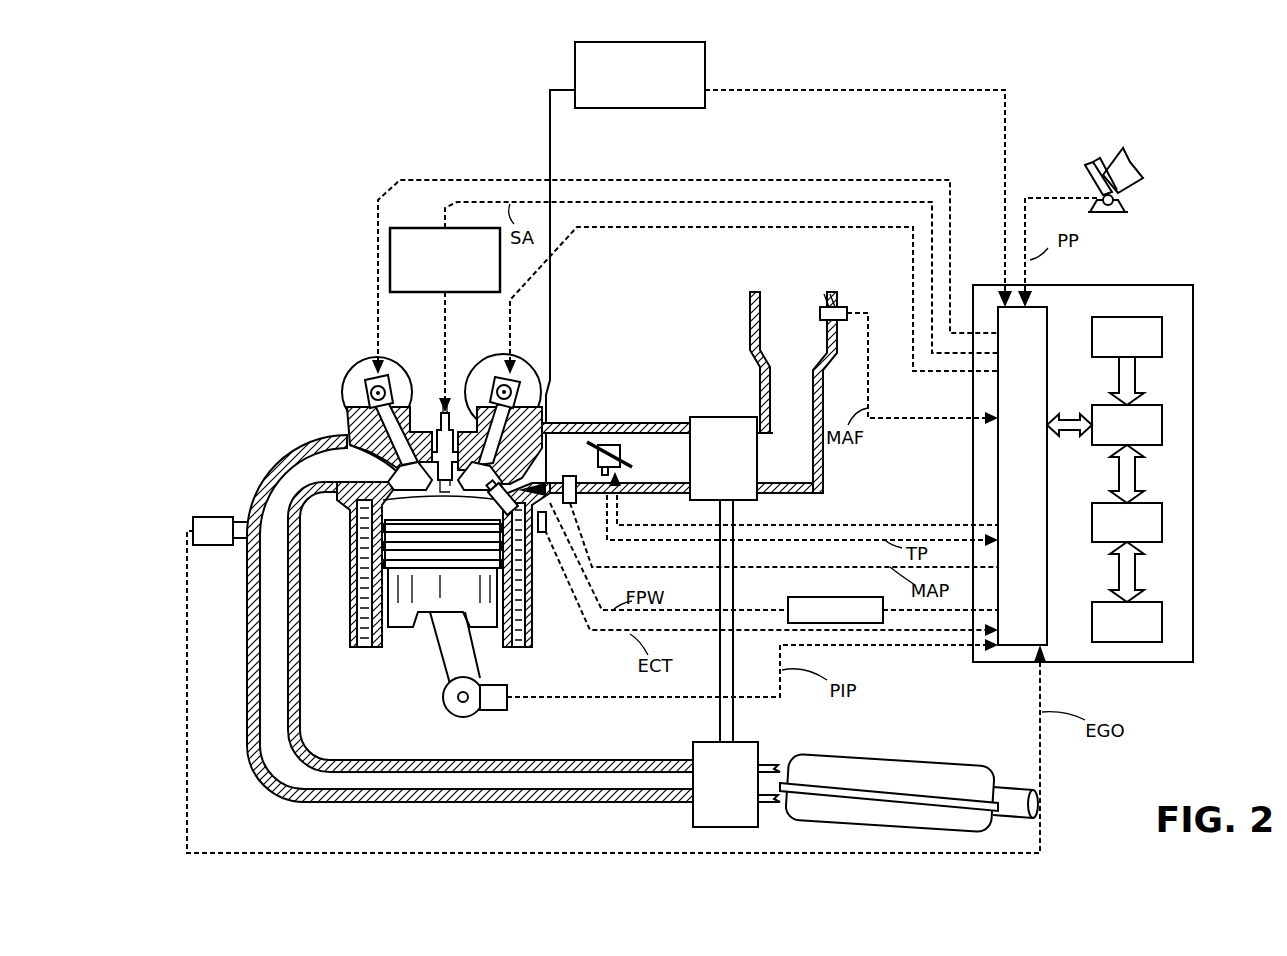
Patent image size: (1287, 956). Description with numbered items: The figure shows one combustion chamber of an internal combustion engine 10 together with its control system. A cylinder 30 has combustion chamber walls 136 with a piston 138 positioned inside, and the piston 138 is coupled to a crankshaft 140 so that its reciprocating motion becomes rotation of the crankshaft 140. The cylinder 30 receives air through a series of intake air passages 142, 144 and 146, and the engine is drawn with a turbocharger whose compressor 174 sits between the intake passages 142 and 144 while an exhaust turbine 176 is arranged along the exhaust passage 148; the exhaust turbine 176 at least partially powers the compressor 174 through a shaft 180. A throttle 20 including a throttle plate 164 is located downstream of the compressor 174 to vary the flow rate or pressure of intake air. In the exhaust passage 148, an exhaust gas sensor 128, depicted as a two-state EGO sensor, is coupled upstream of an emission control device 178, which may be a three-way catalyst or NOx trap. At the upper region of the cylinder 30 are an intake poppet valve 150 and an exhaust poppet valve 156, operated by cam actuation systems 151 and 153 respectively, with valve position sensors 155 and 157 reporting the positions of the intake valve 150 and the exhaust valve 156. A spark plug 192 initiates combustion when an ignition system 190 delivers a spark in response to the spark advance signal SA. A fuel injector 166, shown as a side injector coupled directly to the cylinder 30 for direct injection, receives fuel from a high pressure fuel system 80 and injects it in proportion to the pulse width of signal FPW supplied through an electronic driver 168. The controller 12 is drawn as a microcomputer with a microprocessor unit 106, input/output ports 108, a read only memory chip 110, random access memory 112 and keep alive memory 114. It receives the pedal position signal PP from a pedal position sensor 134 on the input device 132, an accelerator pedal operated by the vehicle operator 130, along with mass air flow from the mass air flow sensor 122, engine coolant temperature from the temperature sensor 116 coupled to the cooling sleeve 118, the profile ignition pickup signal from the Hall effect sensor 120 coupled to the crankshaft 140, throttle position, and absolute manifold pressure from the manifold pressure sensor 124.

The internal combustion engine 10 is at (182, 118).
The controller 12 is at (1193, 285).
The throttle 20 is at (608, 445).
The cylinder 30 is at (348, 527).
The high pressure fuel system 80 is at (705, 60).
The microprocessor unit 106 is at (1162, 425).
The input/output ports 108 is at (1047, 315).
The read only memory chip 110 is at (1162, 340).
The random access memory 112 is at (1162, 522).
The keep alive memory 114 is at (1162, 622).
The temperature sensor 116 is at (548, 537).
The cooling sleeve 118 is at (530, 650).
The Hall effect sensor 120 is at (500, 712).
The mass air flow sensor 122 is at (840, 307).
The manifold pressure sensor 124 is at (572, 505).
The exhaust gas sensor 128 is at (193, 525).
The vehicle operator 130 is at (1133, 165).
The input device 132 is at (1090, 178).
The pedal position sensor 134 is at (1118, 198).
The combustion chamber walls 136 is at (385, 650).
The piston 138 is at (428, 640).
The crankshaft 140 is at (450, 712).
The intake air passage 142 is at (780, 338).
The intake air passage 144 is at (652, 469).
The intake air passage 146 is at (552, 469).
The exhaust passage 148 is at (305, 476).
The intake poppet valve 150 is at (455, 448).
The cam actuation system 151 is at (500, 368).
The cam actuation system 153 is at (390, 370).
The valve position sensor 155 is at (515, 398).
The exhaust poppet valve 156 is at (372, 420).
The valve position sensor 157 is at (362, 385).
The throttle plate 164 is at (590, 440).
The fuel injector 166 is at (500, 490).
The electronic driver 168 is at (788, 600).
The compressor 174 is at (705, 417).
The exhaust turbine 176 is at (693, 815).
The emission control device 178 is at (958, 757).
The shaft 180 is at (730, 707).
The ignition system 190 is at (410, 228).
The spark plug 192 is at (435, 433).